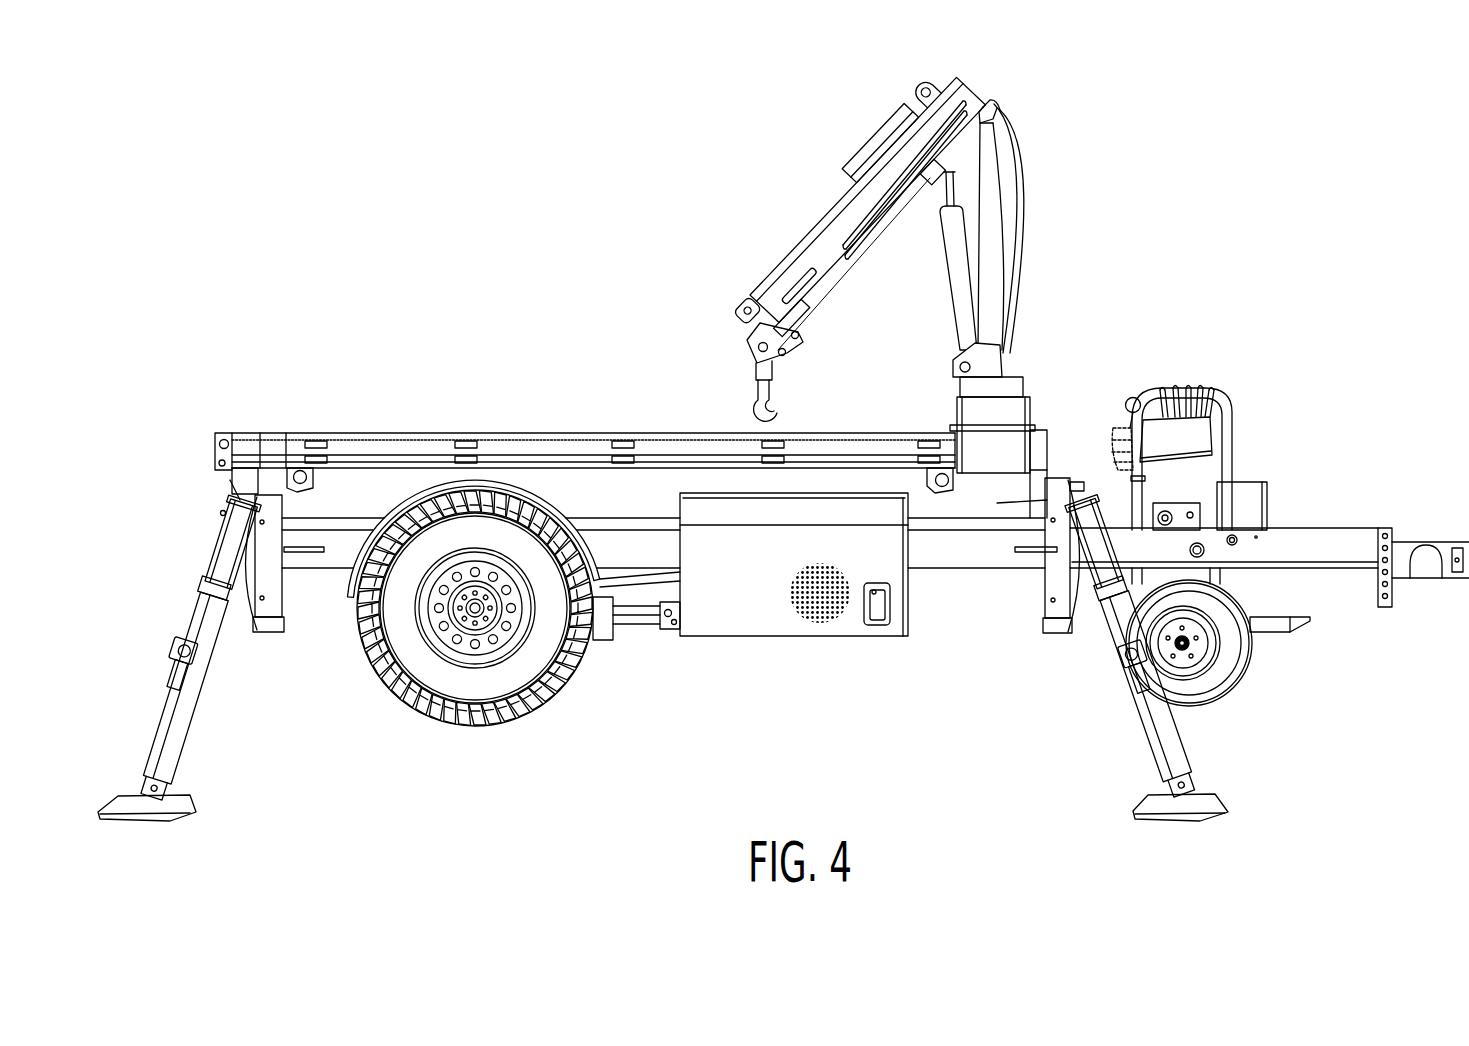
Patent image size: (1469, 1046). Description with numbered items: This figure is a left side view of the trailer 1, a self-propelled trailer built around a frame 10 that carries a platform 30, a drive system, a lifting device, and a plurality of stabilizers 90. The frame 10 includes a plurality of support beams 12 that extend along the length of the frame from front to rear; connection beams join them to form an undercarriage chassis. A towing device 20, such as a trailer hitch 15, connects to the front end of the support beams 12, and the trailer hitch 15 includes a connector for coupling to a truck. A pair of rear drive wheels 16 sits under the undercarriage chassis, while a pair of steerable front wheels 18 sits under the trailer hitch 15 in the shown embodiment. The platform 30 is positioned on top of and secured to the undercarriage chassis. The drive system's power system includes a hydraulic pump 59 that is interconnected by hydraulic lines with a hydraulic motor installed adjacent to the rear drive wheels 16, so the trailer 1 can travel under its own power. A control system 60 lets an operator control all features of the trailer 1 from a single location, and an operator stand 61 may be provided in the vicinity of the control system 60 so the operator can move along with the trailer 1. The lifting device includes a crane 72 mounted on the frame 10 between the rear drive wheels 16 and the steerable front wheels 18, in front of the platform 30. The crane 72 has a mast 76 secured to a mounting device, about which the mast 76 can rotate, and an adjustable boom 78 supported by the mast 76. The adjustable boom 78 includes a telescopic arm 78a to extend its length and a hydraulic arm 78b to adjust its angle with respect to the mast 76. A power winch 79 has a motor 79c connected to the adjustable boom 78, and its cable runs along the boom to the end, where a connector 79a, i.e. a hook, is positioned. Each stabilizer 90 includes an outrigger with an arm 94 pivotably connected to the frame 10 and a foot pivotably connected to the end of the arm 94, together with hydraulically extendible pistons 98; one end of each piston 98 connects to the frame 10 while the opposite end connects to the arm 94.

The trailer 1 is at (783, 432).
The frame 10 is at (633, 552).
The support beams 12 is at (327, 552).
The trailer hitch 15 is at (1433, 543).
The rear drive wheels 16 is at (528, 678).
The steerable front wheels 18 is at (1250, 652).
The towing device 20 is at (1253, 480).
The platform 30 is at (312, 433).
The hydraulic pump 59 is at (767, 630).
The control system 60 is at (1142, 388).
The operator stand 61 is at (1250, 482).
The crane 72 is at (862, 143).
The mast 76 is at (1000, 264).
The adjustable boom 78 is at (927, 70).
The telescopic arm 78a is at (745, 292).
The hydraulic arm 78b is at (958, 240).
The power winch 79 is at (1013, 140).
The connector 79a is at (746, 417).
The motor 79c is at (916, 188).
The stabilizers 90 is at (226, 560).
The arm 94 is at (184, 732).
The hydraulically extendible pistons 98 is at (1040, 600).